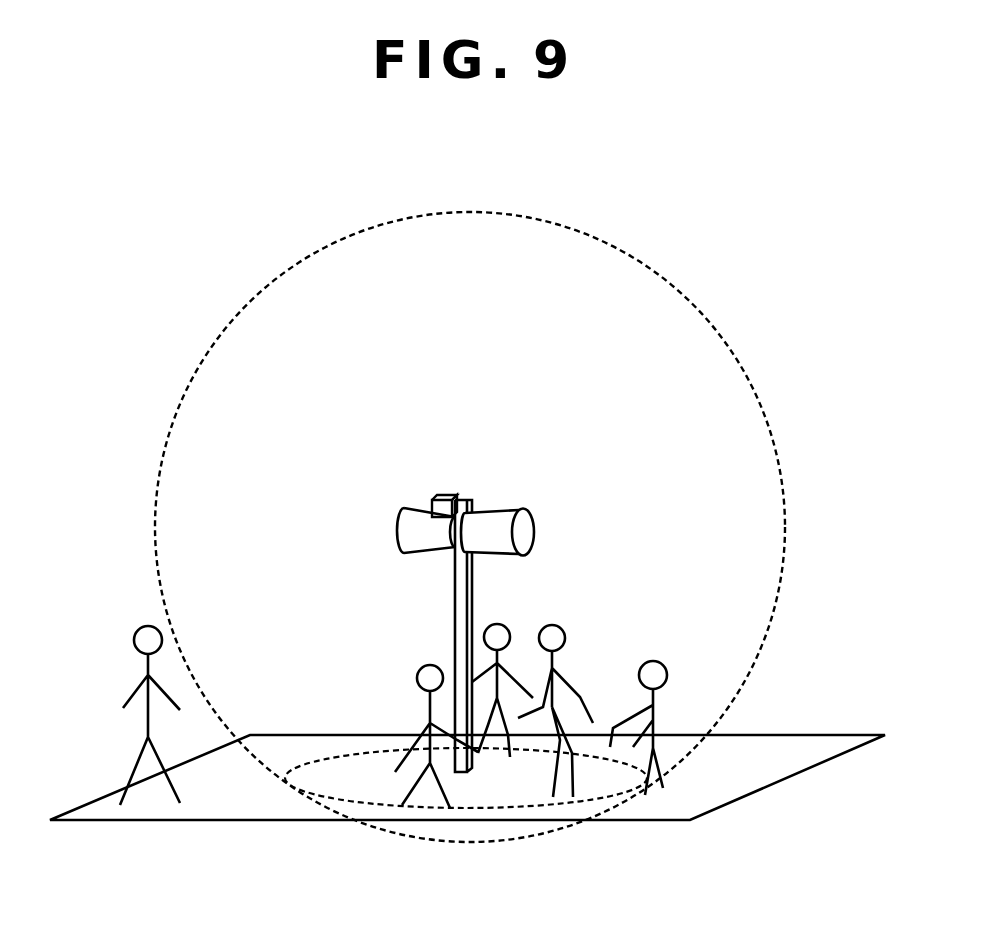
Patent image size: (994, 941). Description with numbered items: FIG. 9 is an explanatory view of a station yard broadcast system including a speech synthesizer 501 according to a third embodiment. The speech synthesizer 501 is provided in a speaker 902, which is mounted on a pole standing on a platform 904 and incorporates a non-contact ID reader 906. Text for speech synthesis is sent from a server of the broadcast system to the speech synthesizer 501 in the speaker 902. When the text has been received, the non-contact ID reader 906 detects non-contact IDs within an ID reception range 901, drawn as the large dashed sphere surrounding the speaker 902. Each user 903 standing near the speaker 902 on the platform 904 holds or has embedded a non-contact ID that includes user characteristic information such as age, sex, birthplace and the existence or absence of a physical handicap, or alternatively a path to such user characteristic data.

The ID reception range 901 is at (677, 288).
The speaker 902 is at (512, 508).
The user 903 is at (657, 797).
The floor area 904 is at (132, 800).
The speech synthesizer 501 is at (445, 495).
The non-contact ID reader 906 is at (430, 498).